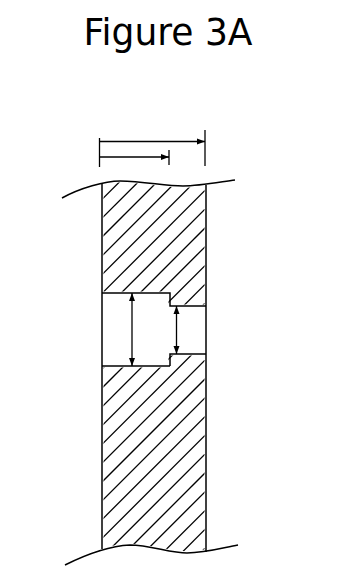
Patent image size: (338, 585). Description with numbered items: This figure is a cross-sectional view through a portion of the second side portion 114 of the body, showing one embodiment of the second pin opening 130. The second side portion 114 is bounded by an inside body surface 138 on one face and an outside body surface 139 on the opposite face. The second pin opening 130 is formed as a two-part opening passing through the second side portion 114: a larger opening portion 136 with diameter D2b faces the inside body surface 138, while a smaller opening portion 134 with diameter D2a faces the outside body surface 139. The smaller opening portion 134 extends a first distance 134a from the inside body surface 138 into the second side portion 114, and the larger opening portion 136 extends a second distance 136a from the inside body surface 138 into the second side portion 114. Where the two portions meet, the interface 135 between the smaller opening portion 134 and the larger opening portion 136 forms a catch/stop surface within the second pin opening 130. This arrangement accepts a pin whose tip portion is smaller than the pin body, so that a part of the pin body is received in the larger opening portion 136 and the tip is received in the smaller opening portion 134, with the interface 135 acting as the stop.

The second side portion 114 is at (207, 491).
The inside body surface 138 is at (101, 217).
The outside body surface 139 is at (207, 204).
The interface 135 is at (172, 301).
The second pin opening 130 is at (199, 328).
The larger opening portion 136 is at (120, 367).
The smaller opening portion 134 is at (178, 352).
The diameter of larger opening portion D2b is at (131, 315).
The diameter of smaller opening portion D2a is at (178, 318).
The first distance 134a is at (125, 139).
The second distance 136a is at (127, 158).